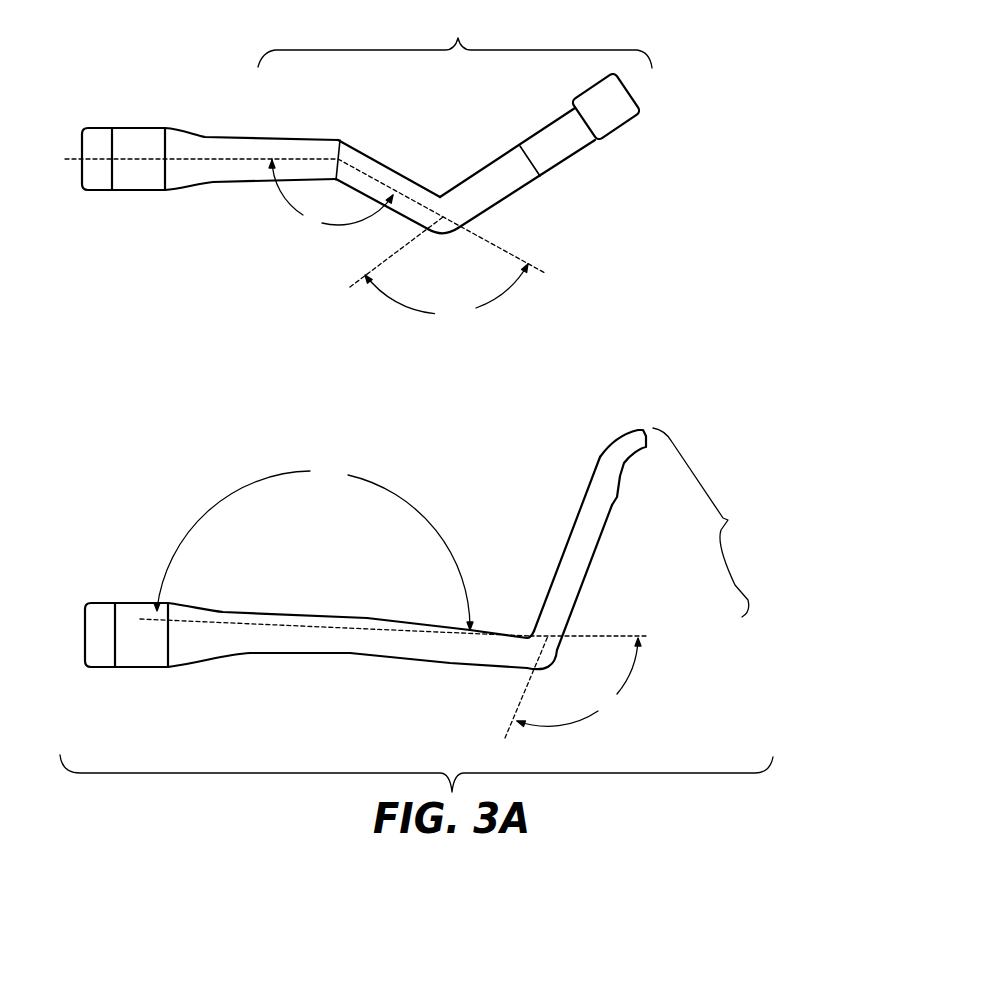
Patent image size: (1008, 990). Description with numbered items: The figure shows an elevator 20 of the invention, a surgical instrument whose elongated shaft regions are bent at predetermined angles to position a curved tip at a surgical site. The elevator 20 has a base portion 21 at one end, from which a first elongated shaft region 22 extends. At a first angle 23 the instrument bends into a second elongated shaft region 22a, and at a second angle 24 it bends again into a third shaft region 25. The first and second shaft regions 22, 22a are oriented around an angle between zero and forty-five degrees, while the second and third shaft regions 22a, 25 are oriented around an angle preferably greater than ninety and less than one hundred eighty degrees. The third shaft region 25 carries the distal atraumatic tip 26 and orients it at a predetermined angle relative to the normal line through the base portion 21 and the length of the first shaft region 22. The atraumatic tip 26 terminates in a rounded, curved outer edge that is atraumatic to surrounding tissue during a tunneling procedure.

The elevator 20 is at (416, 399).
The base portion 21 is at (97, 183).
The first elongated shaft region 22 is at (203, 138).
The second elongated shaft region 22a is at (393, 170).
The first angle 23 is at (339, 140).
The second angle 24 is at (438, 240).
The third shaft region 25 is at (570, 144).
The distal atraumatic tip 26 is at (623, 82).